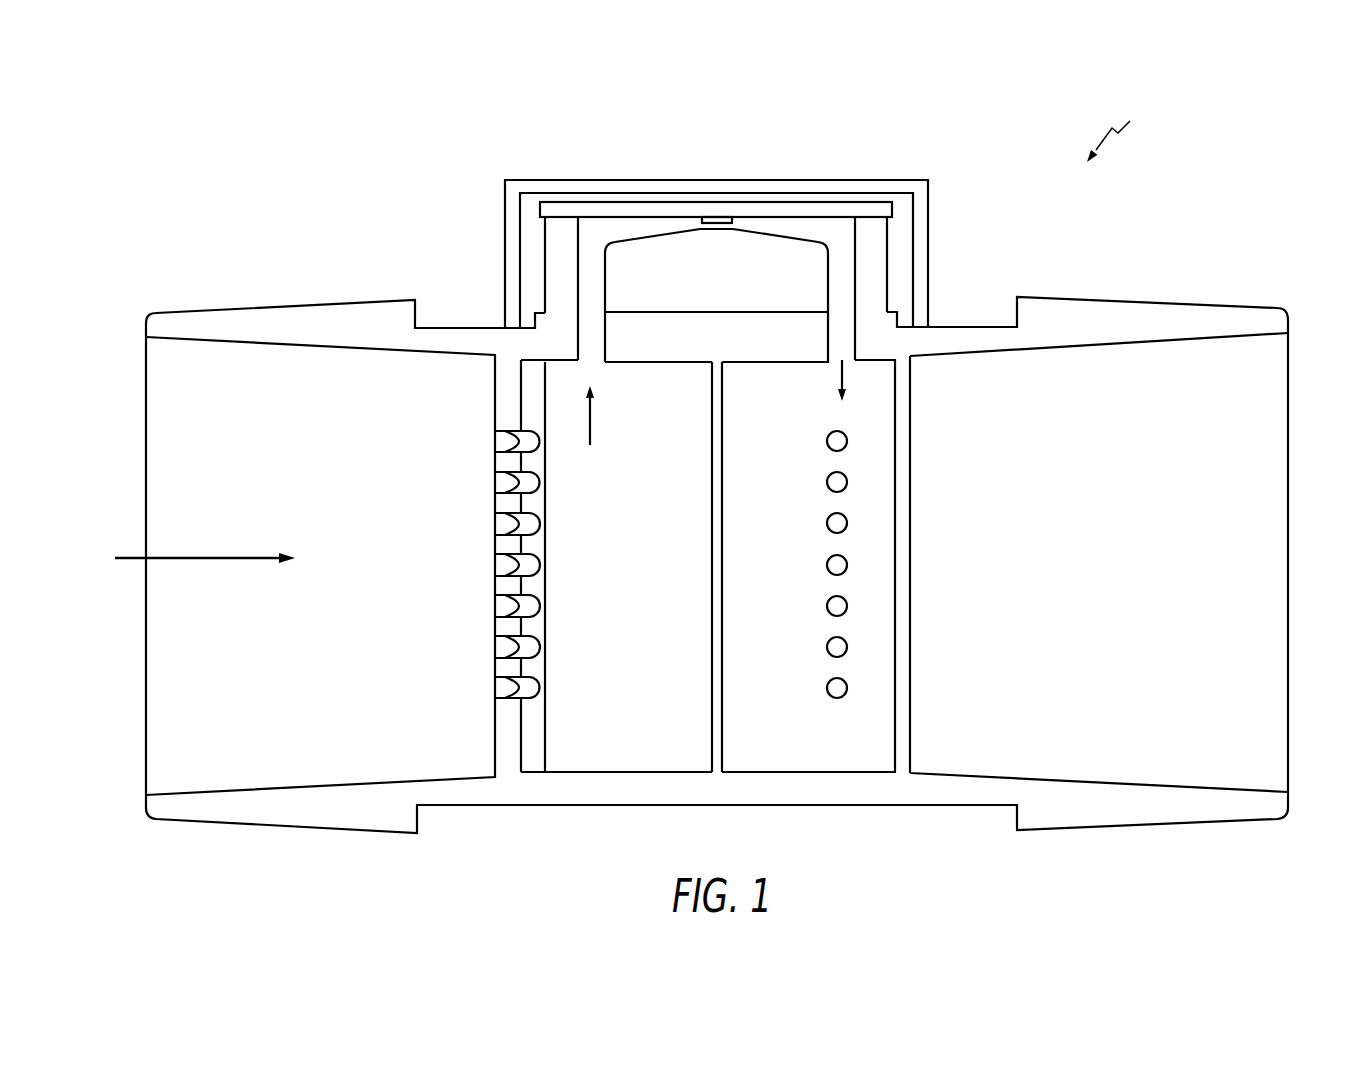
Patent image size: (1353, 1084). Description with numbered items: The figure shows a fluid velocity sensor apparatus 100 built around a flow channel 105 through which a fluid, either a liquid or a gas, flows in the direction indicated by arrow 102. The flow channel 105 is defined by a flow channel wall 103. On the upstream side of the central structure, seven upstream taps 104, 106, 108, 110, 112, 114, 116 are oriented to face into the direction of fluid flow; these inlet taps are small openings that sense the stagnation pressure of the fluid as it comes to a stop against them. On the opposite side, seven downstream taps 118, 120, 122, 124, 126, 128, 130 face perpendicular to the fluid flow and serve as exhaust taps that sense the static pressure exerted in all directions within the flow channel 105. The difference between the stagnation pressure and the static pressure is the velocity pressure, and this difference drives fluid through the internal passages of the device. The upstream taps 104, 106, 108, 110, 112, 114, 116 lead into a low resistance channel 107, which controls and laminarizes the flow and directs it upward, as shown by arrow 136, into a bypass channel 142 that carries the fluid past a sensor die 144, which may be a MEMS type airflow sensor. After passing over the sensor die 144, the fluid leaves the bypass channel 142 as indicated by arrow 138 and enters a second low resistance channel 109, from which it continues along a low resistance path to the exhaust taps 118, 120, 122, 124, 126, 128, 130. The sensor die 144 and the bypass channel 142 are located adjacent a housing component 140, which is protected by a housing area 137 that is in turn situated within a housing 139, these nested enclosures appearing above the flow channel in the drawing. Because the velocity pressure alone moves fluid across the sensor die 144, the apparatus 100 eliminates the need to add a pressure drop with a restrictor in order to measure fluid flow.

The fluid velocity sensor apparatus 100 is at (1125, 132).
The arrow 102 is at (203, 557).
The flow channel wall 103 is at (258, 318).
The upstream tap 104 is at (478, 442).
The flow channel 105 is at (202, 400).
The upstream tap 106 is at (478, 482).
The low resistance channel 107 is at (594, 593).
The upstream tap 108 is at (478, 524).
The low resistance channel 109 is at (759, 593).
The upstream tap 110 is at (478, 565).
The upstream tap 112 is at (478, 606).
The upstream tap 114 is at (478, 647).
The upstream tap 116 is at (478, 688).
The downstream tap 118 is at (872, 441).
The downstream tap 120 is at (872, 482).
The downstream tap 122 is at (872, 523).
The downstream tap 124 is at (872, 565).
The downstream tap 126 is at (872, 606).
The downstream tap 128 is at (872, 647).
The downstream tap 130 is at (872, 688).
The arrow 136 is at (600, 428).
The housing area 137 is at (920, 208).
The arrow 138 is at (840, 378).
The housing 139 is at (900, 253).
The housing component 140 is at (845, 212).
The bypass channel 142 is at (785, 228).
The sensor die 144 is at (718, 217).